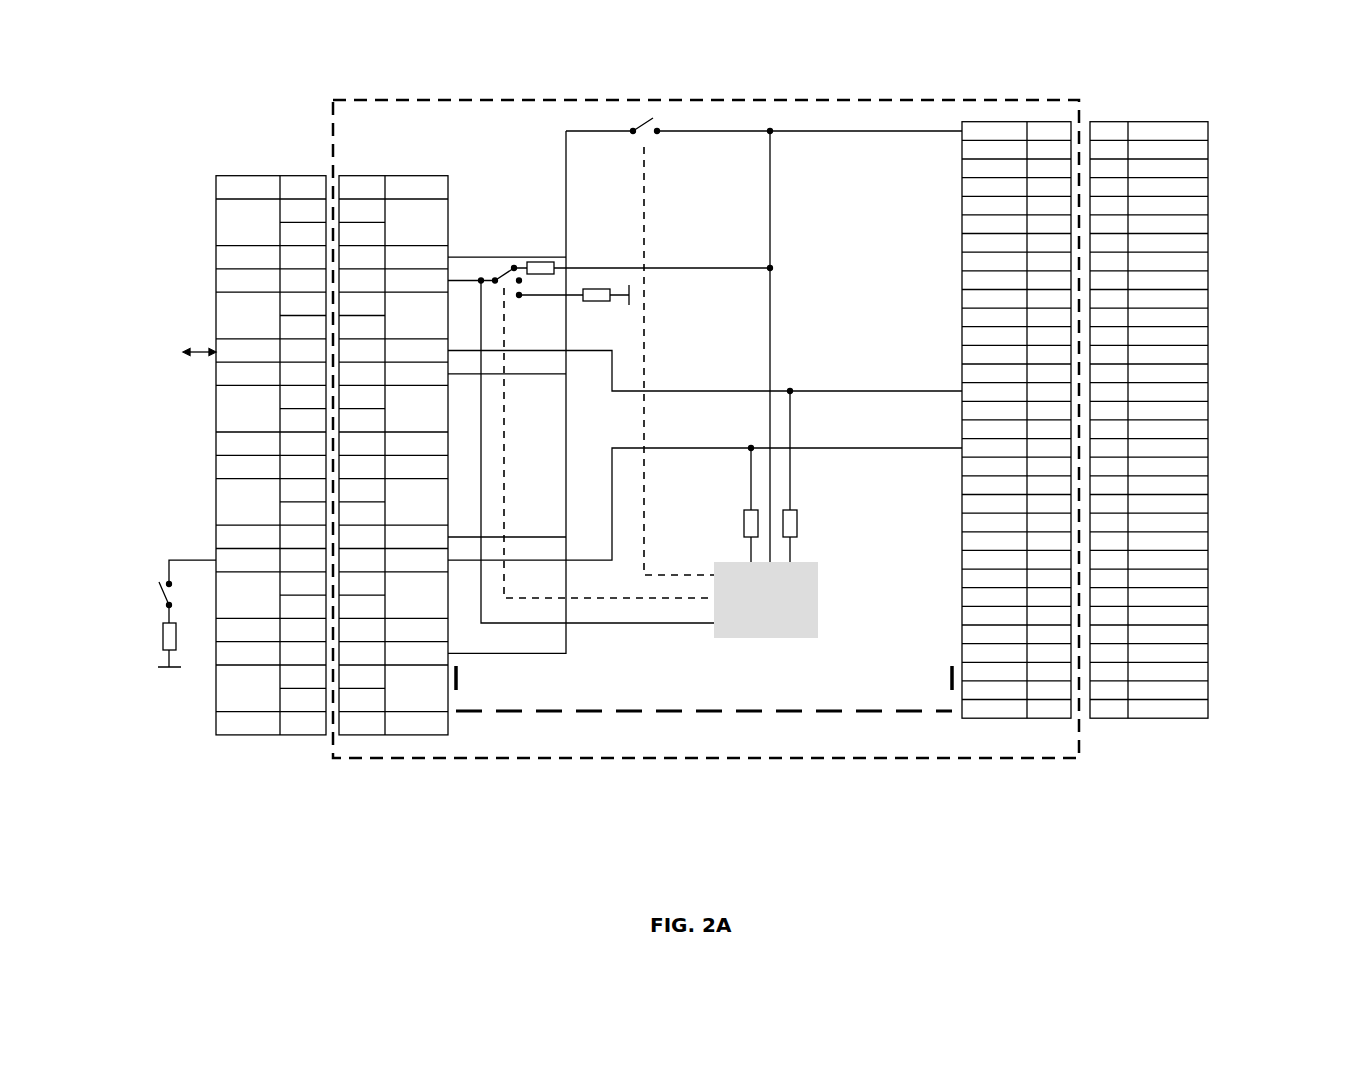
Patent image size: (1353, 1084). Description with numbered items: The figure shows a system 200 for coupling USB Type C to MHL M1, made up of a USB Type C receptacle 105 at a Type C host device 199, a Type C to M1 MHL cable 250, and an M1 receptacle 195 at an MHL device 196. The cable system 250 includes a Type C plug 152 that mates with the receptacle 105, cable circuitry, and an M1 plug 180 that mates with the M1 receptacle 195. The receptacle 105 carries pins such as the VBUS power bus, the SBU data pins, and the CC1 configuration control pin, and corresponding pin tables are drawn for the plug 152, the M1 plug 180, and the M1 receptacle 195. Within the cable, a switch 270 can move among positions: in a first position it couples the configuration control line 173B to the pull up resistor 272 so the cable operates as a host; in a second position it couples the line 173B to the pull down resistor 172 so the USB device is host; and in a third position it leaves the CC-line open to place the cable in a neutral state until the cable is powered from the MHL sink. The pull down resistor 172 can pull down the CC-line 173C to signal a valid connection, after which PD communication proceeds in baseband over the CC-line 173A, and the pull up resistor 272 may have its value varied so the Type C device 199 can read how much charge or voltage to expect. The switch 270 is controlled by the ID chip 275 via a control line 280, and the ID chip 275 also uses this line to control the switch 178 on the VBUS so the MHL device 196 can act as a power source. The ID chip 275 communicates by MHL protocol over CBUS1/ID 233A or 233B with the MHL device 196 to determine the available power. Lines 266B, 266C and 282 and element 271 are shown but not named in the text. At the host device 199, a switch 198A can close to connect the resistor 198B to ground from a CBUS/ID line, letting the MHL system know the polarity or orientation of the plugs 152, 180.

The system 200 is at (527, 55).
The USB Type C receptacle 105 is at (230, 738).
The Type C plug 152 is at (367, 733).
The host device 199 is at (152, 473).
The MHL device 196 is at (1305, 473).
The M1 plug 180 is at (1045, 720).
The M1 receptacle 195 is at (1205, 695).
The Type C to M1 MHL cable 250 is at (427, 758).
The switch 270 is at (555, 712).
The switch SW3 pole 271 is at (522, 283).
The pull up resistor 272 is at (530, 262).
The pull down resistor 172 is at (594, 290).
The switch 178 is at (653, 121).
The CC-line 173A is at (566, 632).
The configuration control line 173B is at (452, 287).
The CC-line 173C is at (216, 280).
The SBU1 to CBUS 0/ID line 266B is at (607, 393).
The SBU2 to CBUS1/ID eCBUS line 266C is at (197, 356).
The CBUS1/ID 233A is at (960, 391).
The CBUS1/ID 233B is at (960, 448).
The control line 280 is at (645, 532).
The control line to SW3 282 is at (598, 594).
The ID chip 275 is at (815, 613).
The switch 198A is at (183, 562).
The resistor 198B is at (162, 637).